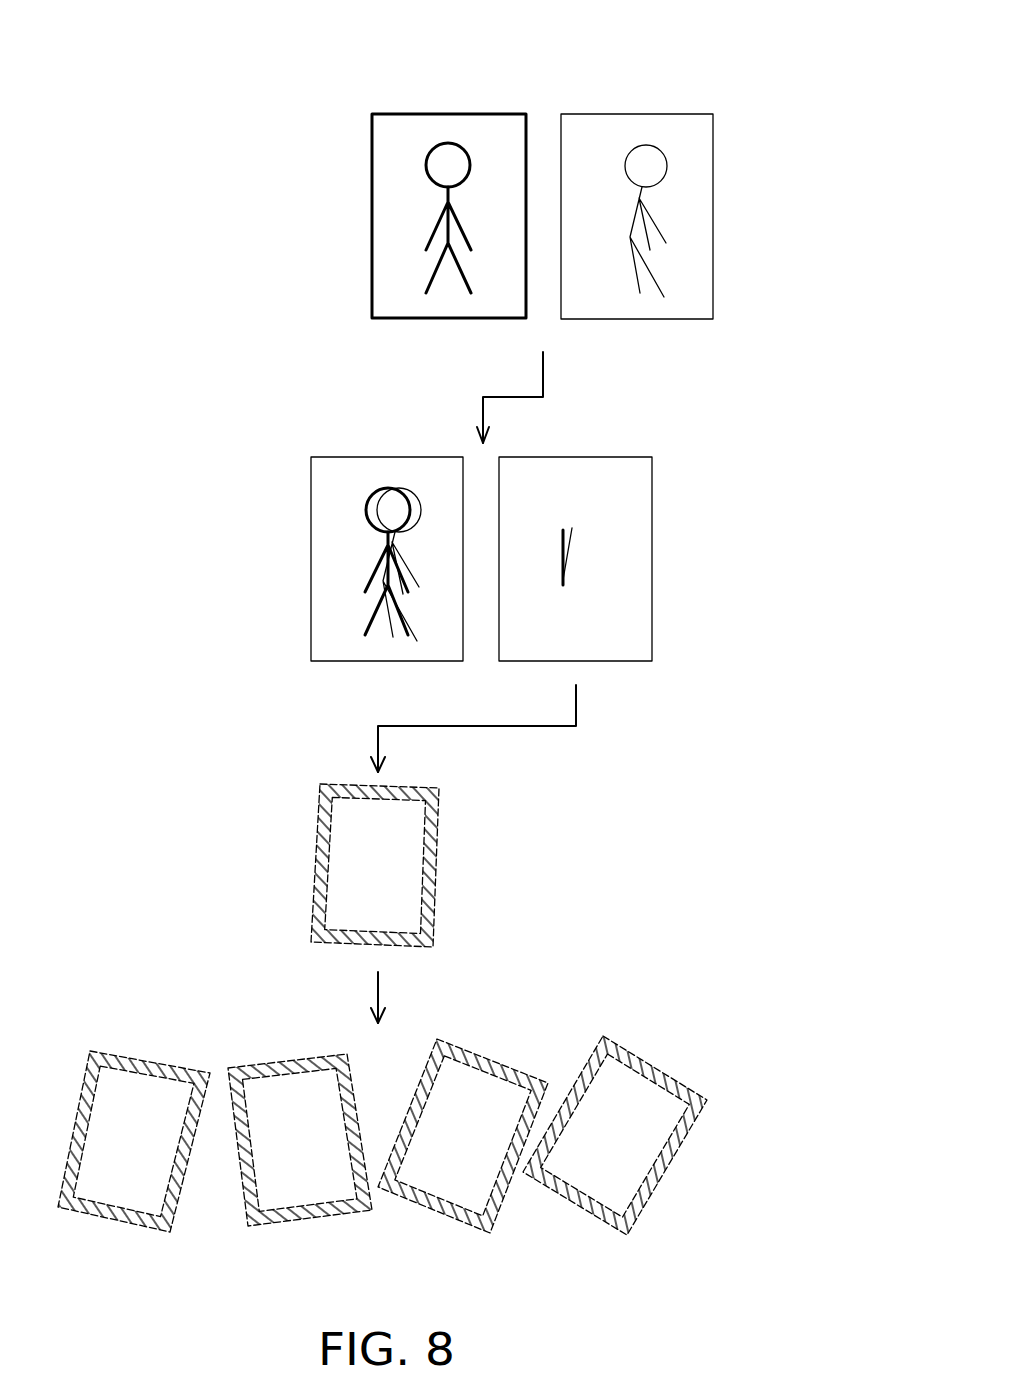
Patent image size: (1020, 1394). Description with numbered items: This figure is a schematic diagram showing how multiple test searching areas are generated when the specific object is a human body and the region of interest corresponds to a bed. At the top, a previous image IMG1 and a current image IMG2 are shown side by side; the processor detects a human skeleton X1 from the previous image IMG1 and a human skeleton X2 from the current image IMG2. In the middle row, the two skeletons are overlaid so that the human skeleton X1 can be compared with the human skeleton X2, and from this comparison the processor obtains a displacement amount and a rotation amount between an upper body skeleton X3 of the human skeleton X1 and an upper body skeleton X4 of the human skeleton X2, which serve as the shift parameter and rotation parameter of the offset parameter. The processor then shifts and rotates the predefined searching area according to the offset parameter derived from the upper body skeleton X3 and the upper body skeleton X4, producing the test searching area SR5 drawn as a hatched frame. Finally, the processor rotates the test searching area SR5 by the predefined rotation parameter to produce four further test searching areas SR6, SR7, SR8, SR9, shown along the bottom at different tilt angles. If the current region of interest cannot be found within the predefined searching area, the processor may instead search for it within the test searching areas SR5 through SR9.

The previous image IMG1 is at (448, 114).
The current image IMG2 is at (637, 114).
The human skeleton X1 is at (425, 164).
The human skeleton X2 is at (667, 165).
The upper body skeleton X3 is at (561, 532).
The upper body skeleton X4 is at (572, 537).
The test searching area SR5 is at (317, 862).
The test searching area SR6 is at (112, 1218).
The test searching area SR7 is at (315, 1218).
The test searching area SR8 is at (440, 1212).
The test searching area SR9 is at (578, 1205).